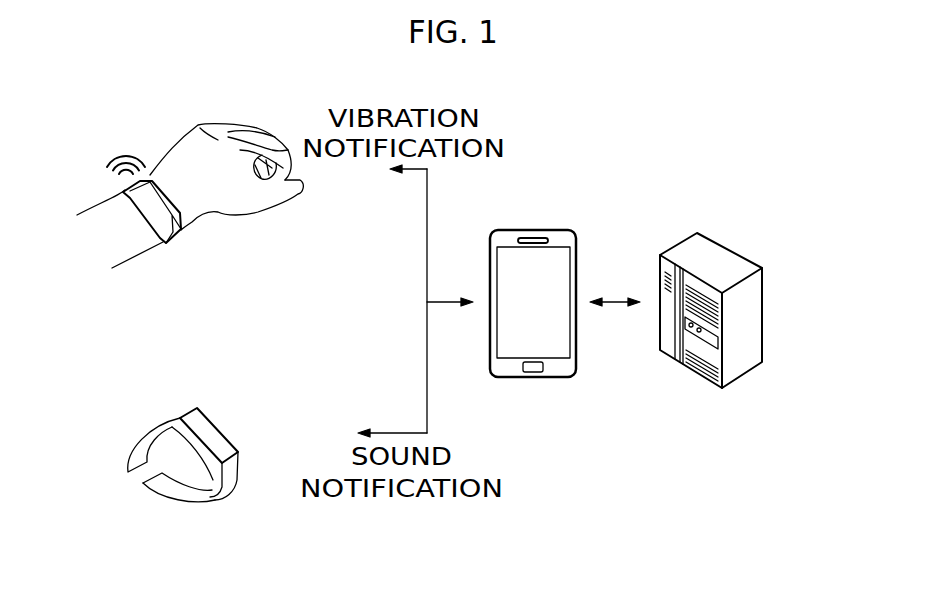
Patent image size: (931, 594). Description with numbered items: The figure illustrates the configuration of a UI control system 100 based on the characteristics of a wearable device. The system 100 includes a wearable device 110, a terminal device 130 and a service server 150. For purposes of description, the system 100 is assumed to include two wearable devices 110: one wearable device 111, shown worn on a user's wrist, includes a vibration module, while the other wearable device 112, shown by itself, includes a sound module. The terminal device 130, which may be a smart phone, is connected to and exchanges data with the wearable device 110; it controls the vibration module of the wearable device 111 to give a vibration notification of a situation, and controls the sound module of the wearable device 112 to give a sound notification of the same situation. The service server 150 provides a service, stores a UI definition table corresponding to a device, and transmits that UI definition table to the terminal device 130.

The UI control system 100 is at (651, 503).
The wearable device 110 is at (262, 335).
The wearable device with vibration module 111 is at (176, 246).
The wearable device with sound module 112 is at (212, 418).
The terminal device 130 is at (528, 230).
The service server 150 is at (727, 248).